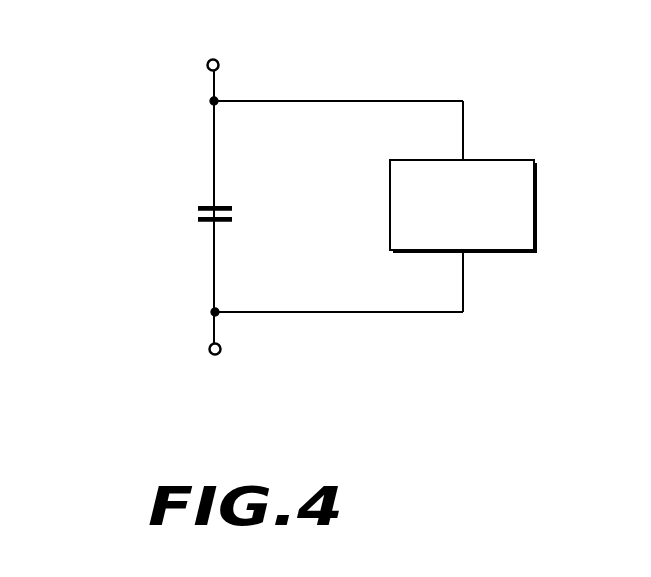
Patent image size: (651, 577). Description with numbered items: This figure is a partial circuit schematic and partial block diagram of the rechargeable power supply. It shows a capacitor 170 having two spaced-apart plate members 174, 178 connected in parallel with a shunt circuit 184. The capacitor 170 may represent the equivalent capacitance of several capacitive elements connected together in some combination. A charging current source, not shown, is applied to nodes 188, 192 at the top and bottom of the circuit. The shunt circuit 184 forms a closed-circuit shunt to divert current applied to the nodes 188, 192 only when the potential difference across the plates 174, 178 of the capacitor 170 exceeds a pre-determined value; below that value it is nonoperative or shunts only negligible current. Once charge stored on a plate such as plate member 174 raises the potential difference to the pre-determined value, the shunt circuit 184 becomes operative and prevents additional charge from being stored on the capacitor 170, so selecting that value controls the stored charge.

The capacitor 170 is at (193, 215).
The plate member 174 is at (206, 206).
The plate member 178 is at (206, 224).
The shunt circuit 184 is at (495, 158).
The node 188 is at (218, 60).
The node 192 is at (220, 354).